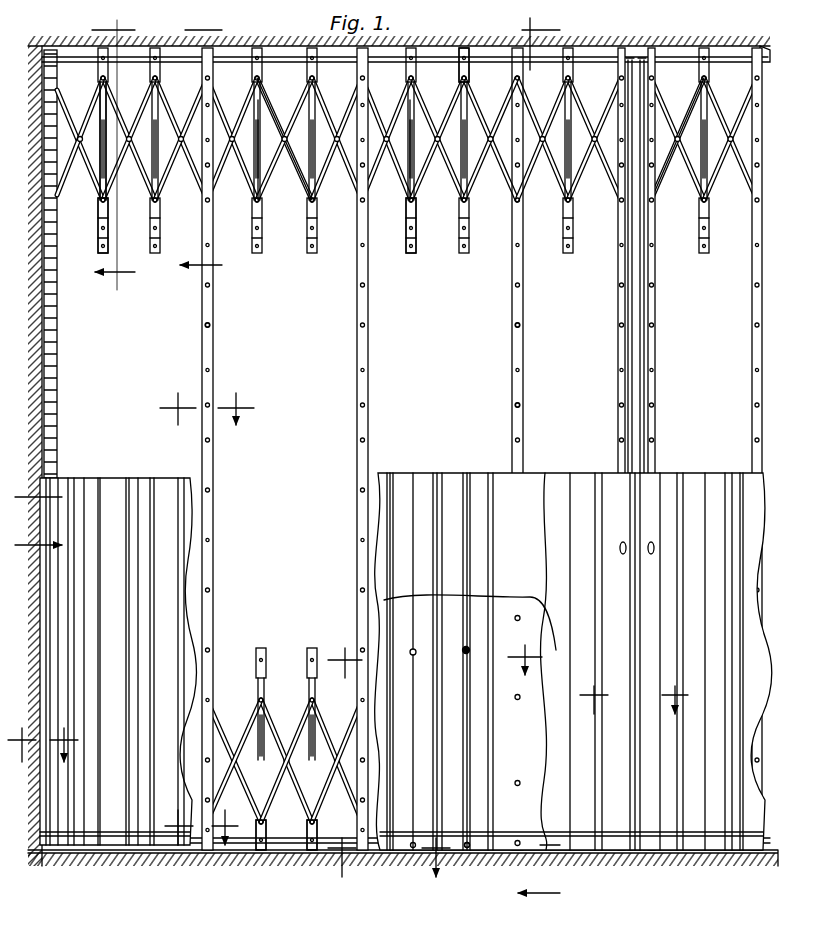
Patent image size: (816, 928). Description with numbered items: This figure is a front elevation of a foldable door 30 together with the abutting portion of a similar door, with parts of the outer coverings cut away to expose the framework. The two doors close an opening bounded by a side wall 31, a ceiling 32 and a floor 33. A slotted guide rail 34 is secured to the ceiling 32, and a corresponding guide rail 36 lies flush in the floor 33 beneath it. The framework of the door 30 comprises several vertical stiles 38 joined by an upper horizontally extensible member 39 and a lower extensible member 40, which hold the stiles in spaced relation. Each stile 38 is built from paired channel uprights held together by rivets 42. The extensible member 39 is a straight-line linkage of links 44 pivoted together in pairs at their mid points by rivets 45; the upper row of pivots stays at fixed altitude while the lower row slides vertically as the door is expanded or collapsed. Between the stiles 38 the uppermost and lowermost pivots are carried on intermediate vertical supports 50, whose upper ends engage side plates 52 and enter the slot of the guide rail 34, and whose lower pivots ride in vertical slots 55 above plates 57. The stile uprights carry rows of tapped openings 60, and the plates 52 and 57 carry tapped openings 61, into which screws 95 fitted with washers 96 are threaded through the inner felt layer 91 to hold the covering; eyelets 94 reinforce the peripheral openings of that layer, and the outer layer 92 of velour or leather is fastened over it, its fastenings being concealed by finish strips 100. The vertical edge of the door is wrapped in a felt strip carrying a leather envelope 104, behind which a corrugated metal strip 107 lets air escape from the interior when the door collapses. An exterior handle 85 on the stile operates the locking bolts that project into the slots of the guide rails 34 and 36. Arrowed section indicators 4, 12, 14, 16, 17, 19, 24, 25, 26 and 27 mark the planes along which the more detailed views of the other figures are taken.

The section line 4 is at (635, 690).
The section line 12 is at (31, 521).
The section line 14 is at (197, 150).
The section line 16 is at (114, 151).
The section line 17 is at (207, 399).
The section line 19 is at (201, 824).
The section line 24 is at (435, 674).
The section line 25 is at (387, 872).
The section line 26 is at (41, 734).
The section line 27 is at (536, 461).
The foldable door 30 is at (148, 830).
The side wall 31 is at (48, 405).
The ceiling 32 is at (440, 47).
The floor 33 is at (468, 843).
The guide rail 34 is at (556, 47).
The guide rail 36 is at (205, 855).
The vertical stile 38 is at (58, 284).
The upper horizontally extensible member 39 is at (300, 178).
The lower extensible member 40 is at (247, 722).
The rivet 42 is at (212, 326).
The link 44 is at (142, 162).
The rivet 45 is at (170, 150).
The intermediate vertical support 50 is at (255, 118).
The side plate 52 is at (468, 66).
The vertical slot 55 is at (258, 225).
The plate 57 is at (100, 232).
The tapped opening 60 is at (214, 47).
The tapped opening 61 is at (262, 47).
The exterior handle 85 is at (648, 550).
The inner layer 91 is at (478, 717).
The outer layer 92 is at (110, 645).
The eyelet 94 is at (555, 865).
The screw 95 is at (464, 648).
The washer 96 is at (464, 653).
The finish strip 100 is at (55, 608).
The exterior envelope of leather 104 is at (45, 667).
The corrugated strip of metal 107 is at (55, 440).